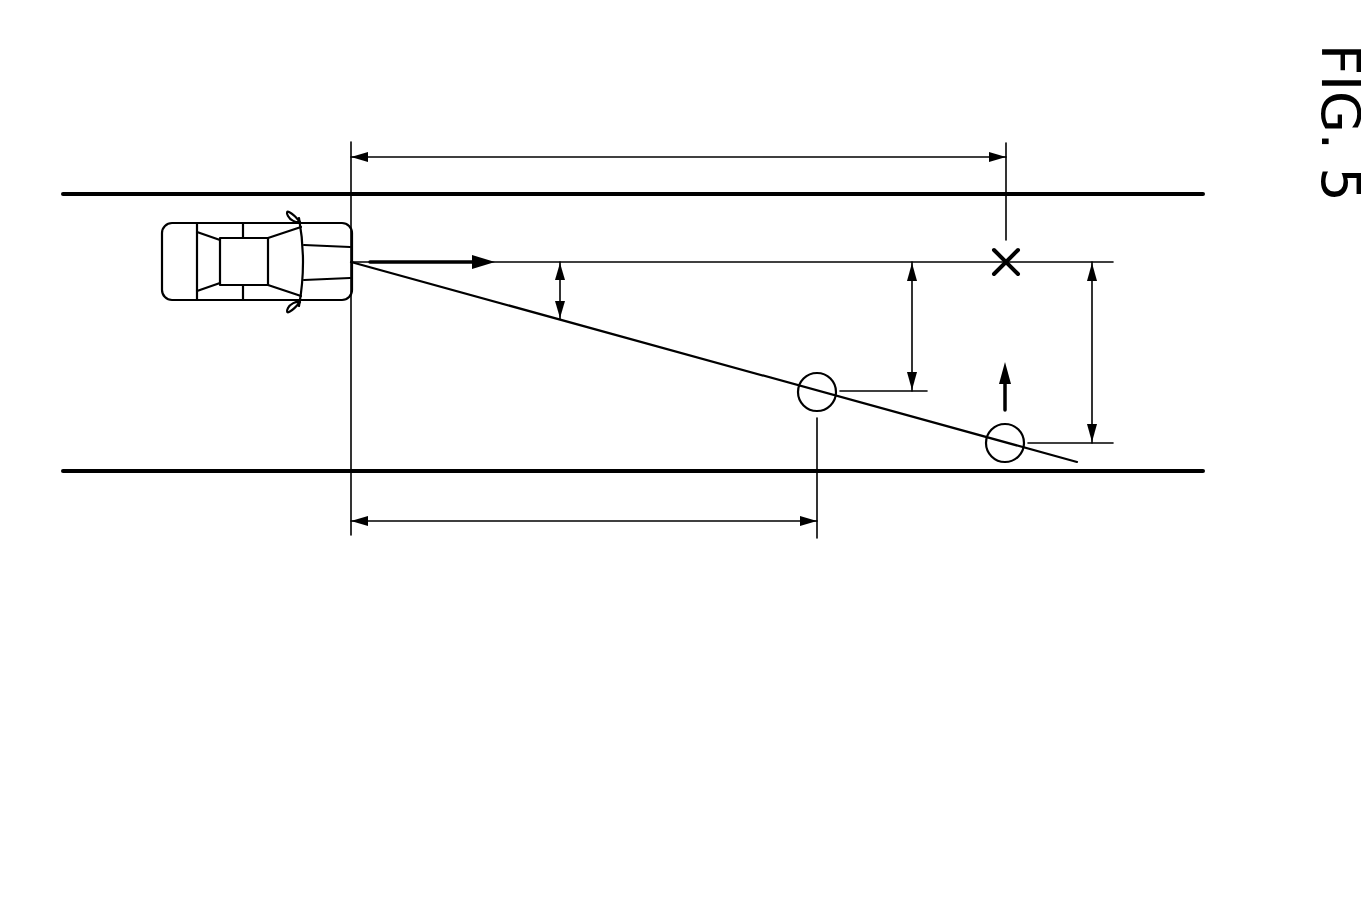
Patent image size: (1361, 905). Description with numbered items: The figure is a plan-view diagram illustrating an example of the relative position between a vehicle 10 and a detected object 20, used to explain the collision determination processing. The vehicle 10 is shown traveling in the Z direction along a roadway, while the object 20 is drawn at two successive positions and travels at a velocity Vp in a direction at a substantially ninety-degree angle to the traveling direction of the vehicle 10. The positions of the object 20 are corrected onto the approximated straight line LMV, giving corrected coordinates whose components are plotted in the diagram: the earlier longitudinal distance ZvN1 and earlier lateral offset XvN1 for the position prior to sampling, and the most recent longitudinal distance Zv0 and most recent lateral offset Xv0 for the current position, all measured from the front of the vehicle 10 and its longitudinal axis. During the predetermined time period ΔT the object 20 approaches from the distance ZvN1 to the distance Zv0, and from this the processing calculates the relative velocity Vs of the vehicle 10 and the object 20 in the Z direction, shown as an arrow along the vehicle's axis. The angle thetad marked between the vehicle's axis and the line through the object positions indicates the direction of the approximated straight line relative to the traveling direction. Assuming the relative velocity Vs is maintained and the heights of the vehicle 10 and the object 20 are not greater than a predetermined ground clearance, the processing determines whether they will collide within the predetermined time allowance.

The vehicle 10 is at (241, 222).
The object 20 is at (831, 406).
The relative velocity Vs is at (432, 244).
The velocity of the object Vp is at (1028, 388).
The deviation angle θd thetad is at (592, 290).
The corrected X coordinate Xv (0) Xv0 is at (924, 326).
The corrected X coordinate Xv (N−1) XvN1 is at (1127, 352).
The corrected distance Zv (0) Zv0 is at (584, 494).
The corrected distance Zv (N−1) ZvN1 is at (678, 177).